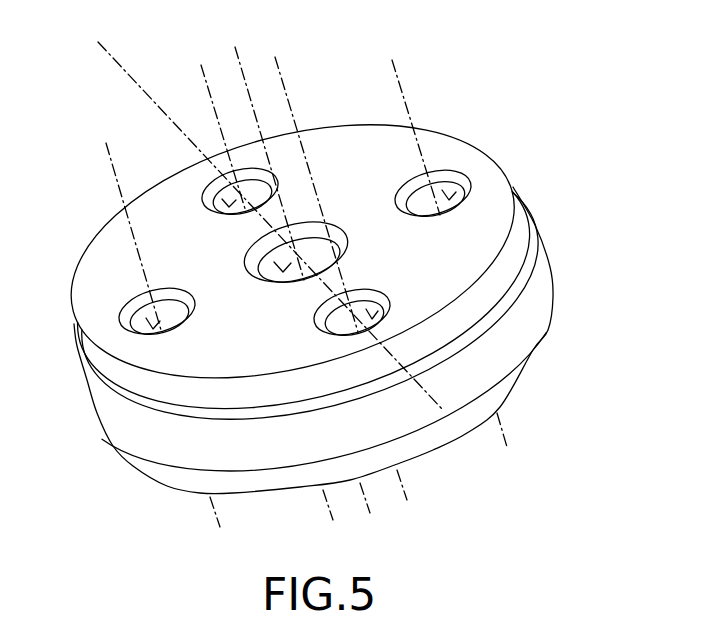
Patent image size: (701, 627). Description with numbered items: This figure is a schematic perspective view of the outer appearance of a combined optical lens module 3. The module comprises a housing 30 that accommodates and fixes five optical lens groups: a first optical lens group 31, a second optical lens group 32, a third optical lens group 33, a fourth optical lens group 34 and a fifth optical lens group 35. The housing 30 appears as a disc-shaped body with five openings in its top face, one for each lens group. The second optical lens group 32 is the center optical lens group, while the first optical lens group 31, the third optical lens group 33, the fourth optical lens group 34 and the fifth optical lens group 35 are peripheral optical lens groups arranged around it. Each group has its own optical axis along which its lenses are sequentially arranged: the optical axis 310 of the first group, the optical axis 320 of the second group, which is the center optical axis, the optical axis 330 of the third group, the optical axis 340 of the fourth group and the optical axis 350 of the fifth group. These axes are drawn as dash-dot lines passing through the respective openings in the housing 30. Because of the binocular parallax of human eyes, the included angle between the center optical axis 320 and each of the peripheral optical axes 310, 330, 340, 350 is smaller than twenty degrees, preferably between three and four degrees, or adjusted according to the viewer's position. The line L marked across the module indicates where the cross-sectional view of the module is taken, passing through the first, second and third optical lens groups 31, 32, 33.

The combined optical lens module 3 is at (534, 41).
The housing 30 is at (543, 281).
The first optical lens group 31 is at (213, 173).
The second optical lens group 32 is at (262, 243).
The third optical lens group 33 is at (387, 297).
The fourth optical lens group 34 is at (453, 177).
The fifth optical lens group 35 is at (123, 303).
The optical axis 310 is at (213, 107).
The optical axis 320 is at (247, 66).
The optical axis 330 is at (293, 103).
The optical axis 340 is at (410, 107).
The optical axis 350 is at (117, 172).
The line L is at (106, 54).